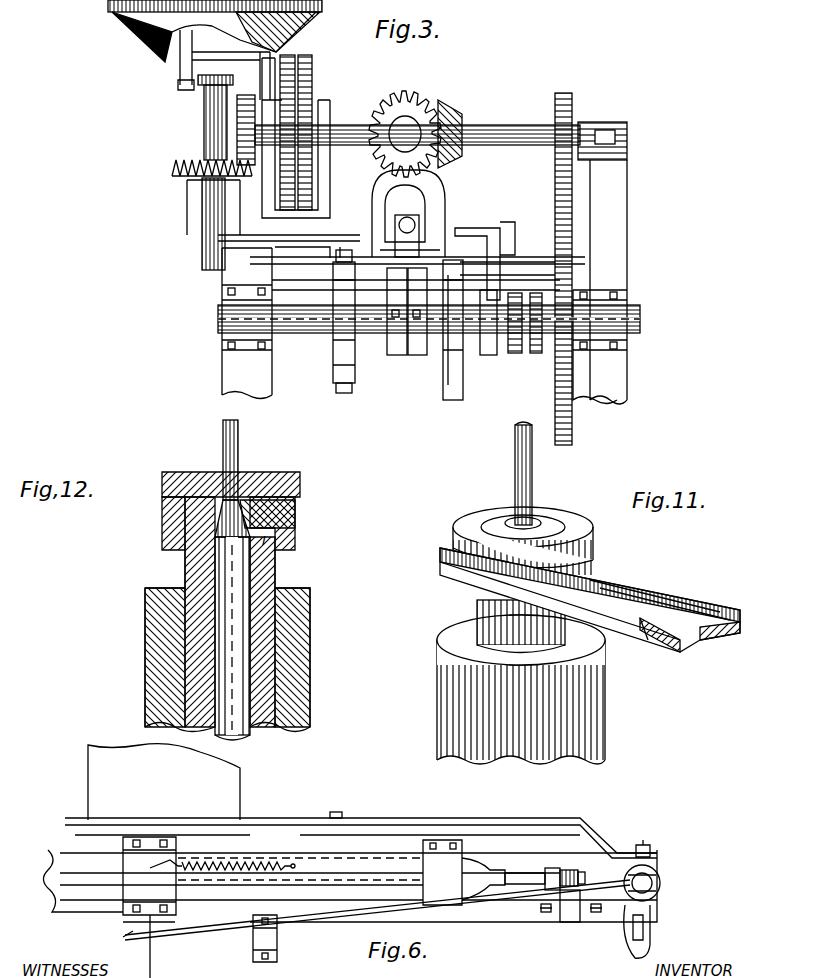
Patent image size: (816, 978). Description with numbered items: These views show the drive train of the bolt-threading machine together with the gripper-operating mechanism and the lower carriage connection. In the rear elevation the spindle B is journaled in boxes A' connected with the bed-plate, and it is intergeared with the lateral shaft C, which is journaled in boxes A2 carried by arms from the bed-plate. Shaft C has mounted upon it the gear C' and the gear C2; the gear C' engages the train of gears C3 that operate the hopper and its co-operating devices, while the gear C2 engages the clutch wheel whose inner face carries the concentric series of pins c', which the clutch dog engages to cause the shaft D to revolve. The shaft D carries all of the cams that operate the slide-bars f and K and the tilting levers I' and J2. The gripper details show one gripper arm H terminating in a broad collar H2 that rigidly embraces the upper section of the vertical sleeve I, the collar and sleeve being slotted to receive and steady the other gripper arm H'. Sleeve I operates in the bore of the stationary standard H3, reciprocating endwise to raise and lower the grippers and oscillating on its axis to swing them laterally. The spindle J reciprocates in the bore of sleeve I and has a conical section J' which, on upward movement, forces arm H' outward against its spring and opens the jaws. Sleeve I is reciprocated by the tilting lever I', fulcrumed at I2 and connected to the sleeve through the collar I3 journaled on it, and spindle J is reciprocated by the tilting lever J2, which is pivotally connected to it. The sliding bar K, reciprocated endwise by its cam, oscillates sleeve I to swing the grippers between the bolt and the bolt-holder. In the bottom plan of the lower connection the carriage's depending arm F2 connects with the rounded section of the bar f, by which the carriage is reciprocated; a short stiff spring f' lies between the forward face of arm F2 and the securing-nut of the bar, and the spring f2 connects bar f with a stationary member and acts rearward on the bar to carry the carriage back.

In FIG. 3, the train of gears C3 is at (288, 58).
In FIG. 3, the gear C' is at (254, 172).
In FIG. 3, the lateral shaft C is at (417, 123).
In FIG. 3, the gear C2 is at (555, 100).
In FIG. 3, the spindle B is at (415, 134).
In FIG. 3, the boxes A' is at (417, 213).
In FIG. 3, the boxes A2 is at (605, 126).
In FIG. 3, the shaft D is at (295, 316).
In FIG. 3, the tilting lever J2 is at (340, 380).
In FIG. 6, the tilting lever J2 is at (318, 938).
In FIG. 3, the sliding bar K is at (394, 355).
In FIG. 6, the sliding bar K is at (350, 886).
In FIG. 3, the bar f is at (414, 323).
In FIG. 6, the bar f is at (503, 874).
In FIG. 3, the vertical sleeve I is at (453, 339).
In FIG. 12, the vertical sleeve I is at (231, 472).
In FIG. 11, the vertical sleeve I is at (535, 510).
In FIG. 3, the pins c' is at (530, 326).
In FIG. 12, the stationary standard H3 is at (302, 626).
In FIG. 11, the stationary standard H3 is at (521, 689).
In FIG. 12, the conical section J' is at (217, 612).
In FIG. 12, the gripper arm H' is at (282, 514).
In FIG. 11, the gripper arm H' is at (638, 645).
In FIG. 12, the spindle J is at (232, 580).
In FIG. 11, the spindle J is at (529, 473).
In FIG. 11, the collar H2 is at (593, 536).
In FIG. 11, the gripper arm H is at (590, 600).
In FIG. 6, the tilting lever I' is at (361, 831).
In FIG. 6, the fulcrum I2 is at (338, 816).
In FIG. 6, the spring f2 is at (285, 862).
In FIG. 6, the depending arm F2 is at (552, 868).
In FIG. 6, the spring f' is at (575, 865).
In FIG. 6, the collar I3 is at (662, 883).